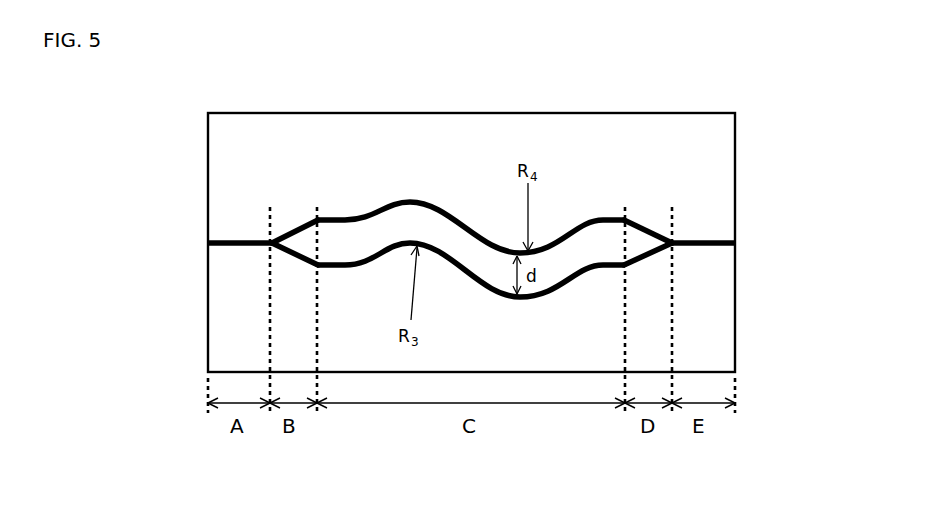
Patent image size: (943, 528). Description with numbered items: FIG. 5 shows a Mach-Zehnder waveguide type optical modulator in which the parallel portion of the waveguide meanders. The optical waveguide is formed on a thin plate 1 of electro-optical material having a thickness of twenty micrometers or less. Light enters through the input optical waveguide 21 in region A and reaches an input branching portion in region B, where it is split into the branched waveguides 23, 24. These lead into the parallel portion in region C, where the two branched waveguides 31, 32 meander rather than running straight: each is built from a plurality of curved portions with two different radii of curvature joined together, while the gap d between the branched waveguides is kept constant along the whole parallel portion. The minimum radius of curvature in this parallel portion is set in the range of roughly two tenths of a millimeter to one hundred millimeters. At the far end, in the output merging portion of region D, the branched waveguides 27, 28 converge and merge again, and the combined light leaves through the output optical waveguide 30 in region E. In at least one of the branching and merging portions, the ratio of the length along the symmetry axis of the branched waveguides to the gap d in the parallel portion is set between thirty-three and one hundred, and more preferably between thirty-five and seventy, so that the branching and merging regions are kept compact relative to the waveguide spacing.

The thin plate 1 is at (600, 133).
The input optical waveguide 21 is at (238, 241).
The branched waveguide 23 is at (298, 229).
The branched waveguide 24 is at (297, 257).
The branched waveguide 27 is at (647, 226).
The branched waveguide 28 is at (648, 257).
The output optical waveguide 30 is at (706, 242).
The branched waveguide 31 is at (413, 201).
The branched waveguide 32 is at (552, 297).